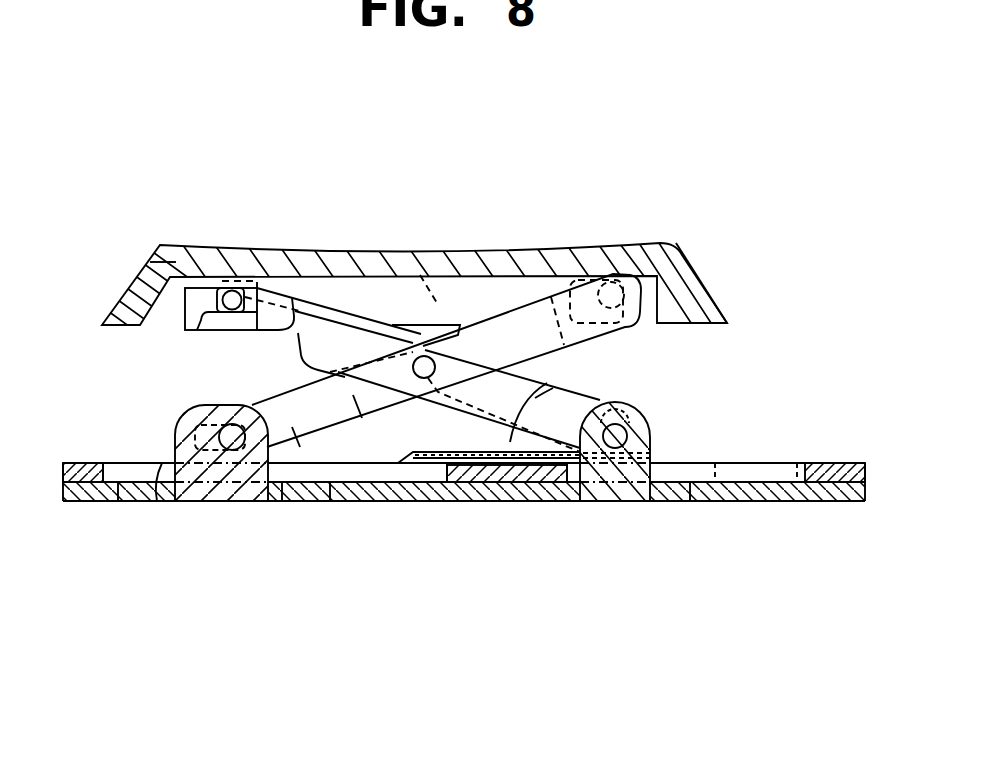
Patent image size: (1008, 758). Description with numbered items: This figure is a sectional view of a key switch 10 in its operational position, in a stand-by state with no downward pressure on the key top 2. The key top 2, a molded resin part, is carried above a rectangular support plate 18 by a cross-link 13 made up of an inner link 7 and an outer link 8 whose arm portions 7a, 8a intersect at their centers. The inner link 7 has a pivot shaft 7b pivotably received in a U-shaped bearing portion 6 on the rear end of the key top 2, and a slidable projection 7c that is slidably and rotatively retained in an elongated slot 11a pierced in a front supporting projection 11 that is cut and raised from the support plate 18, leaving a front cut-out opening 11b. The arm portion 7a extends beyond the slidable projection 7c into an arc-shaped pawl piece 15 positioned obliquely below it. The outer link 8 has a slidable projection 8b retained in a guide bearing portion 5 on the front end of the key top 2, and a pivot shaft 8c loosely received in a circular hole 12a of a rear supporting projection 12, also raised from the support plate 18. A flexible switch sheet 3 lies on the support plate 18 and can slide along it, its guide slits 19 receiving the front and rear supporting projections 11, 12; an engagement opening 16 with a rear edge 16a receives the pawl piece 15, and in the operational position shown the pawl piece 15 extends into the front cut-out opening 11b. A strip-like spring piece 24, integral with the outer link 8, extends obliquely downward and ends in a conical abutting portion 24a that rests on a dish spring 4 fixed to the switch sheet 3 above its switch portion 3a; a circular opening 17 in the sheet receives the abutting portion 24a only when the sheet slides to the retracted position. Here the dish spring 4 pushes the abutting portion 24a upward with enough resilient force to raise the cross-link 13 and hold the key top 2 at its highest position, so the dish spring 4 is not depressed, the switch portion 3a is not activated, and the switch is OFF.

The key top 2 is at (562, 274).
The switch sheet 3 is at (842, 464).
The switch portion 3a is at (539, 492).
The dish spring 4 is at (447, 464).
The guide bearing portion 5 is at (197, 297).
The bearing portion 6 is at (648, 294).
The inner link 7 is at (503, 322).
The arm portion 7a is at (345, 394).
The pivot shaft 7b is at (613, 288).
The slidable projection 7c is at (228, 425).
The outer link 8 is at (350, 342).
The arm portion 8a is at (558, 404).
The slidable projection 8b is at (240, 286).
The pivot shaft 8c is at (643, 413).
The key switch 10 is at (772, 320).
The front supporting projection 11 is at (250, 492).
The elongated slot 11a is at (210, 432).
The front cut-out opening 11b is at (133, 492).
The rear supporting projection 12 is at (633, 492).
The circular hole 12a is at (636, 436).
The cross-link 13 is at (424, 322).
The pawl piece 15 is at (167, 492).
The engagement opening 16 is at (130, 473).
The rear edge 16a is at (292, 476).
The circular opening 17 is at (768, 462).
The support plate 18 is at (811, 492).
The guide slit 19 is at (338, 478).
The spring piece 24 is at (438, 392).
The abutting portion 24a is at (540, 383).